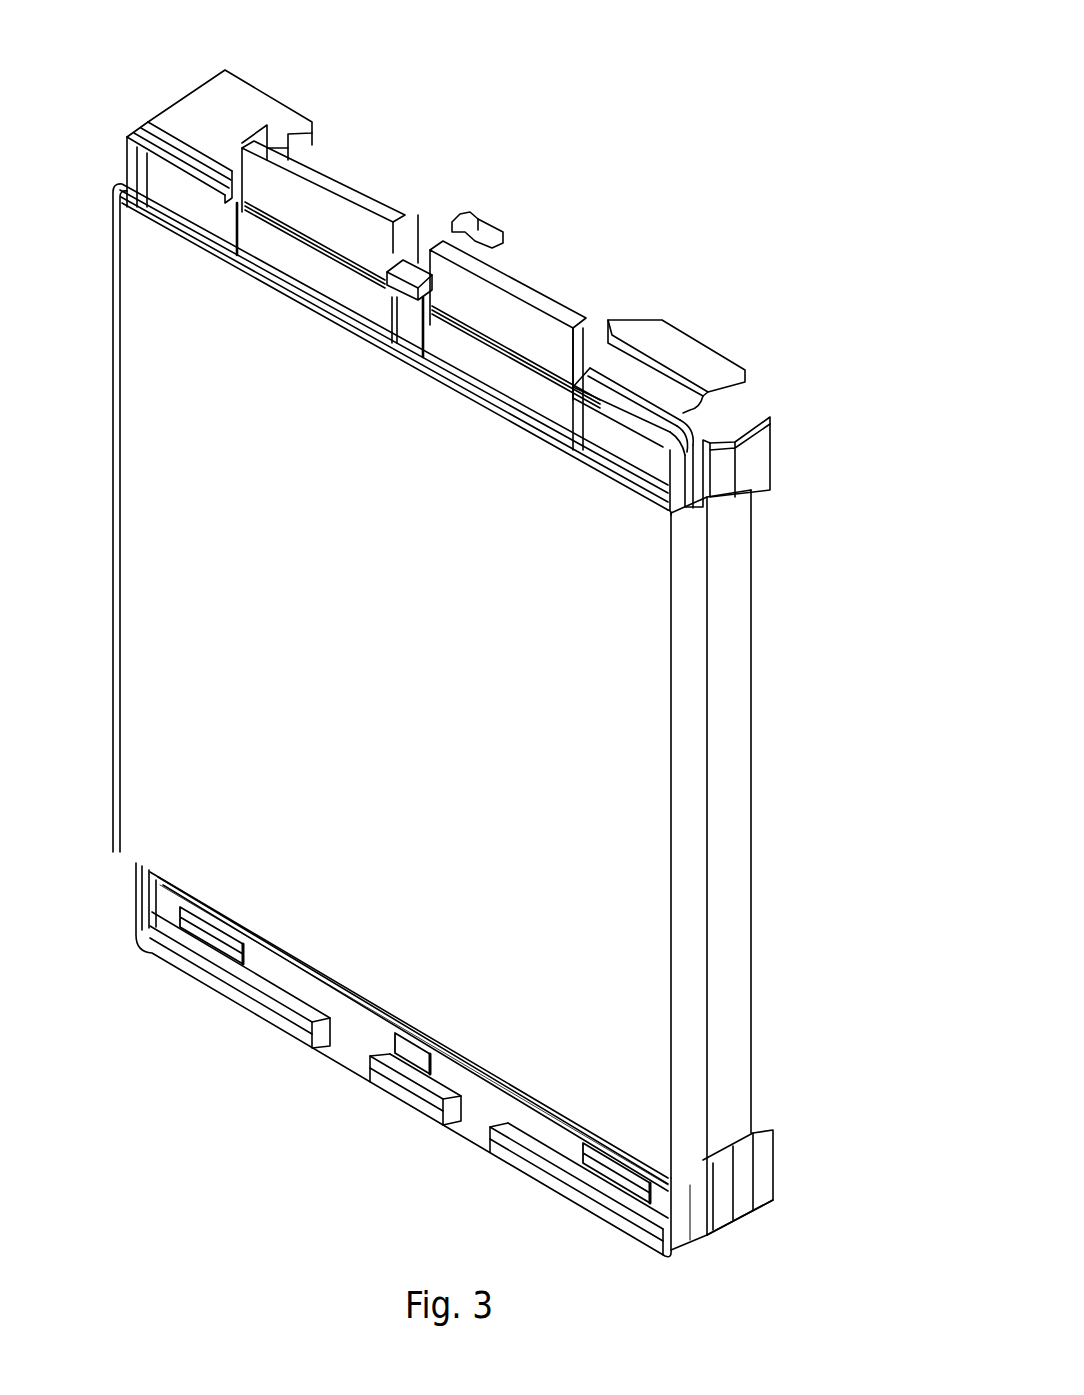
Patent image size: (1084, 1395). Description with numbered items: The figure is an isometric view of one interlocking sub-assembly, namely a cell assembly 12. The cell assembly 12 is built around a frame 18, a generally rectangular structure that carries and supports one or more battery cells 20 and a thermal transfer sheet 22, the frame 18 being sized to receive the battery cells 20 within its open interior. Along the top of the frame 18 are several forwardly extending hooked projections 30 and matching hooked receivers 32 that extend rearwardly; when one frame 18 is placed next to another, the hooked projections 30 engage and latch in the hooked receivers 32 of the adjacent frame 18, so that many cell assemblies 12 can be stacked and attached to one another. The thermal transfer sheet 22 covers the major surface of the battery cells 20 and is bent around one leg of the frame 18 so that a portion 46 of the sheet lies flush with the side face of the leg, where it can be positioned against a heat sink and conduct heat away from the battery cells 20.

The cell assembly 12 is at (648, 150).
The frame 18 is at (158, 114).
The battery cell 20 is at (313, 277).
The thermal transfer sheet 22 is at (403, 686).
The hooked projection 30 is at (260, 103).
The hooked receiver 32 is at (197, 172).
The portion of thermal transfer sheet 46 is at (728, 580).